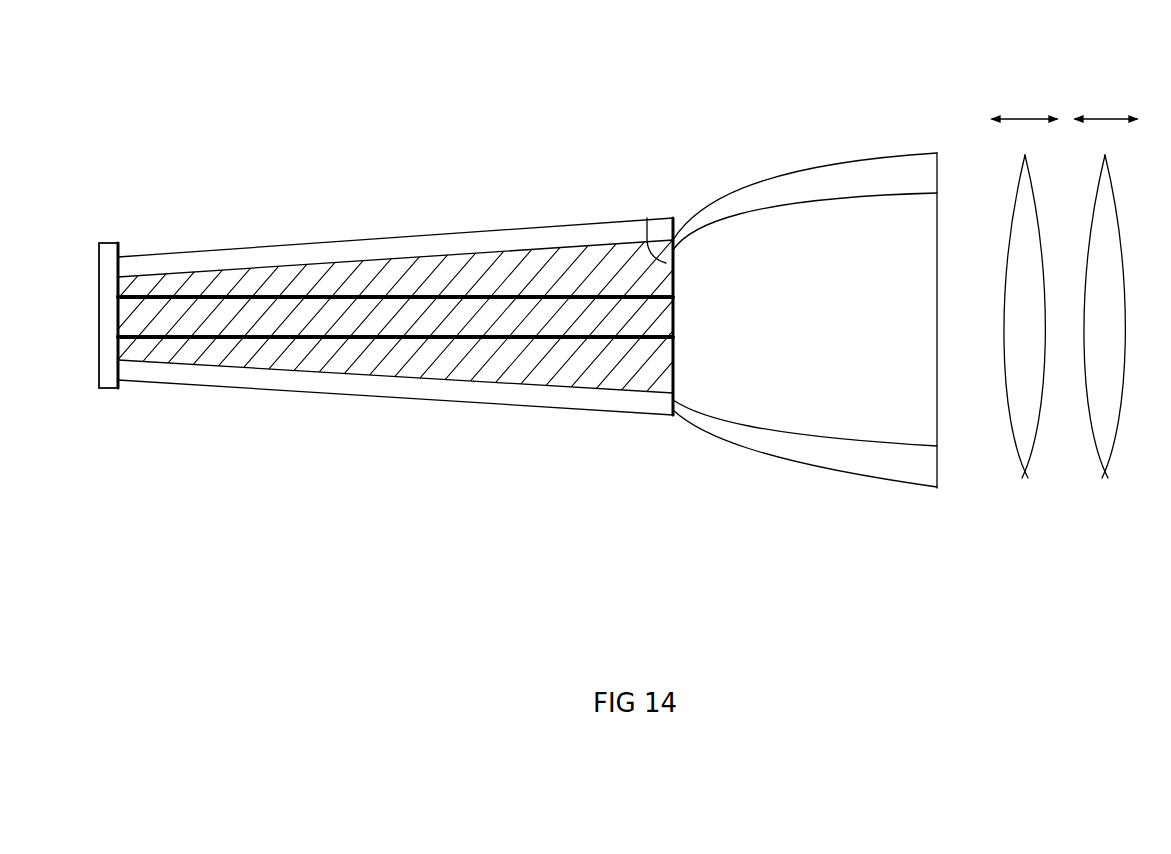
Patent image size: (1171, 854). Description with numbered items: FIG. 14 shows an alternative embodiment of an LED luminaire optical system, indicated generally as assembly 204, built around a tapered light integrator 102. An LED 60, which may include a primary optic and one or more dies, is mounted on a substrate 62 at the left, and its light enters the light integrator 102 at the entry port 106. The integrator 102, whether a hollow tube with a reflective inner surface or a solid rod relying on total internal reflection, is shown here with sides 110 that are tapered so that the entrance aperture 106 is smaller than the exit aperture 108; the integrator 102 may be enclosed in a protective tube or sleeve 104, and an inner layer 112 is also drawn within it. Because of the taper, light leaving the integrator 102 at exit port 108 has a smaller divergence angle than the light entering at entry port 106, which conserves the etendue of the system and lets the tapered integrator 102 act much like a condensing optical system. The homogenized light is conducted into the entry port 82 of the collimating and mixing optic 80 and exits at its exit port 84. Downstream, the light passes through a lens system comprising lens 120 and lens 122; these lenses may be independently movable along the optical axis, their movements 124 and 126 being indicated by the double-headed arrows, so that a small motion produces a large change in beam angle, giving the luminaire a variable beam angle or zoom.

The LED 60 is at (131, 310).
The substrate 62 is at (112, 254).
The collimating and mixing optic 80 is at (811, 216).
The entry port 82 is at (678, 253).
The exit port 84 is at (937, 424).
The light integrator 102 is at (383, 234).
The tube or sleeve 104 is at (306, 254).
The entry port 106 is at (116, 278).
The exit port 108 is at (649, 218).
The sides 110 is at (528, 277).
The hatched layer 112 is at (443, 285).
The lens 120 is at (1025, 472).
The lens 122 is at (1105, 472).
The movement 124 is at (1025, 119).
The movement 126 is at (1110, 119).
The assembly 204 is at (526, 452).